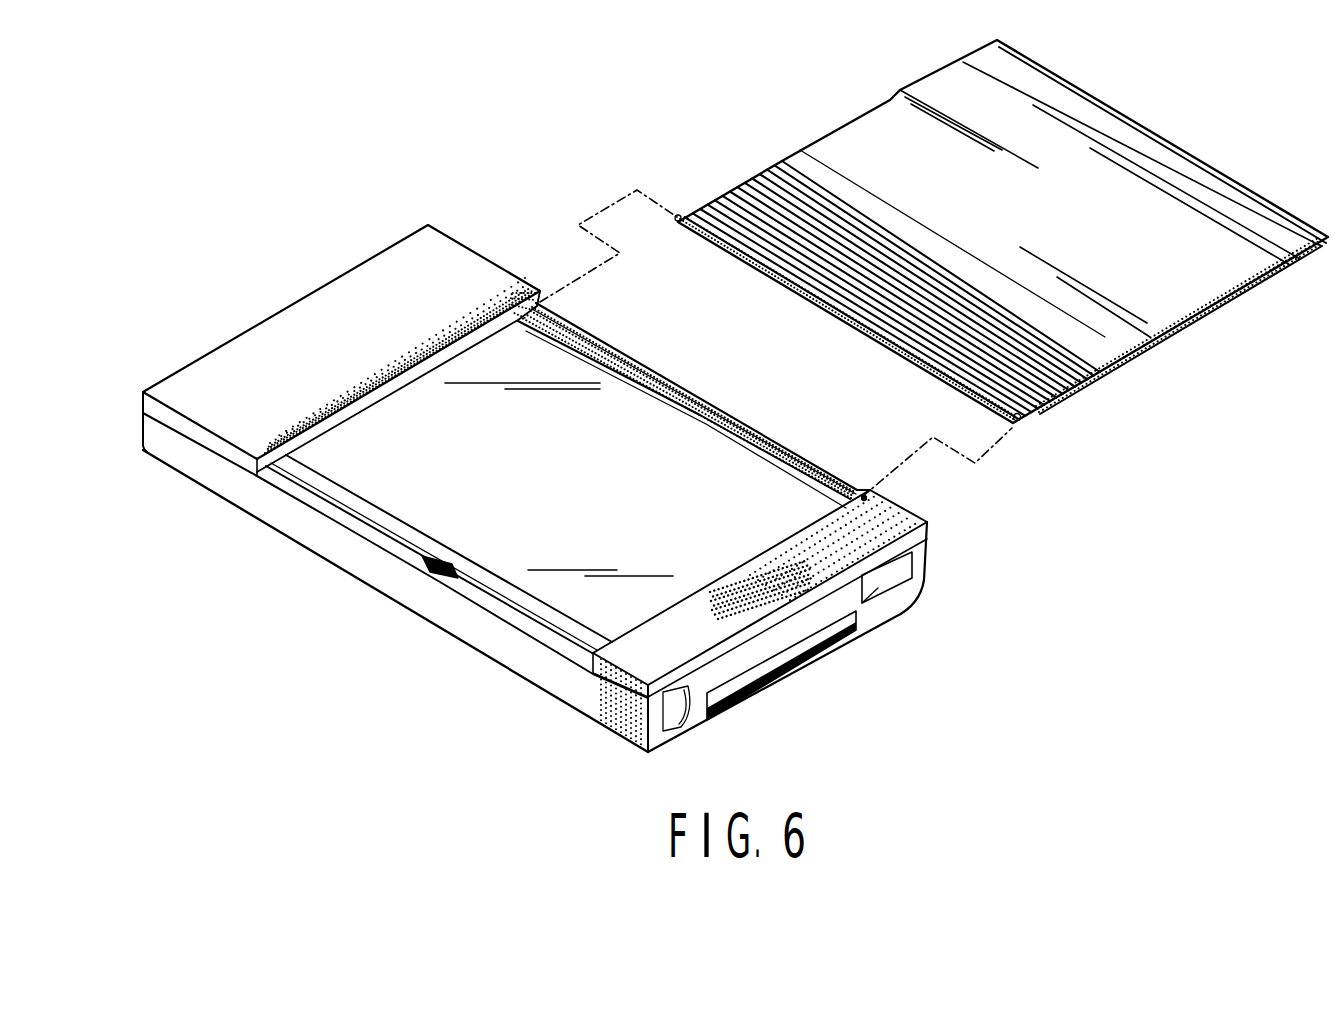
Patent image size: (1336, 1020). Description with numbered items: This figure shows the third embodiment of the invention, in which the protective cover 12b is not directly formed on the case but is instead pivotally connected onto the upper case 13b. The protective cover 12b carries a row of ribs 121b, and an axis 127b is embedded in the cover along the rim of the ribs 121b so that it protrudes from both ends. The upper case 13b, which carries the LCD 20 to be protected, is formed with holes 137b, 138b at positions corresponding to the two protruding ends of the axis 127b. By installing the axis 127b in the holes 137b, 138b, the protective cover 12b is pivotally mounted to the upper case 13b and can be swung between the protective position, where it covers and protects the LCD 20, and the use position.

The protective cover 12b is at (1173, 350).
The upper case 13b is at (293, 353).
The LCD 20 is at (473, 525).
The ribs 121b is at (747, 212).
The axis 127b is at (1037, 417).
The hole 137b is at (521, 285).
The hole 138b is at (870, 497).